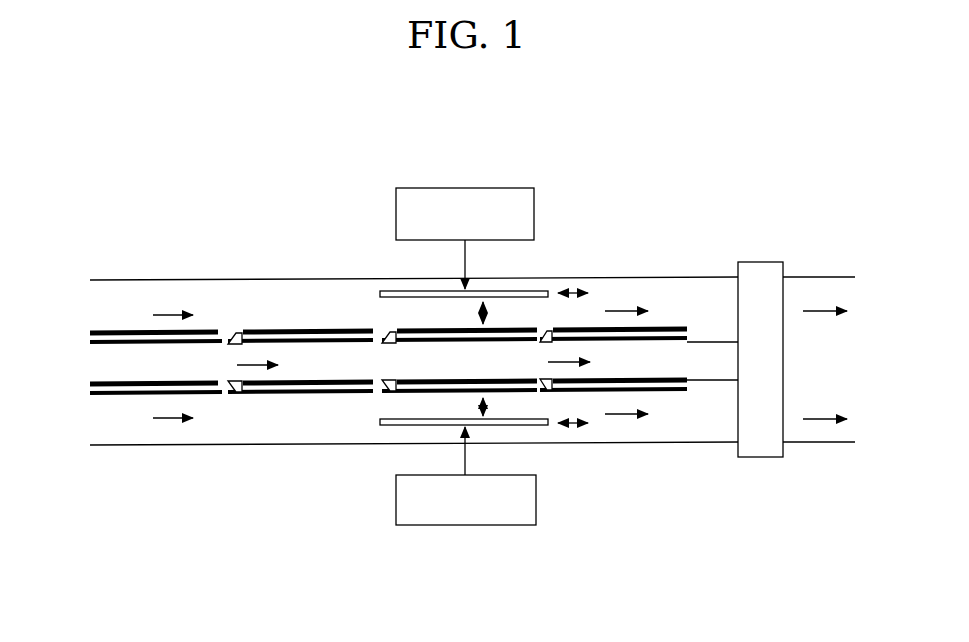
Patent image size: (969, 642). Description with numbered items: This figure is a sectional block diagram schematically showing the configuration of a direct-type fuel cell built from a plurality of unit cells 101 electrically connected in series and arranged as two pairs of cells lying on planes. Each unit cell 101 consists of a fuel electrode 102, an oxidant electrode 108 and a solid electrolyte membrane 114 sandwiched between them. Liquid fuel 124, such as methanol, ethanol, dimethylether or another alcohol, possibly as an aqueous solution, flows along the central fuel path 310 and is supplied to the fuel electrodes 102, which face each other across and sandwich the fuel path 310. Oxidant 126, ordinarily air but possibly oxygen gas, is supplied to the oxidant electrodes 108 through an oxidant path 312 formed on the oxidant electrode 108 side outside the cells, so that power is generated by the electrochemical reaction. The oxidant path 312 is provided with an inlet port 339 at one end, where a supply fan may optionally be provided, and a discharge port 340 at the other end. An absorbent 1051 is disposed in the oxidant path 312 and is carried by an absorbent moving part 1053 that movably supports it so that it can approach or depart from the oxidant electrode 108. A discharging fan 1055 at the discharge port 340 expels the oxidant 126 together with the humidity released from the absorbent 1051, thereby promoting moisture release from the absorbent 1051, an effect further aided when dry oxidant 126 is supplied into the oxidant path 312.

The unit cell 101 is at (276, 326).
The fuel electrode 102 is at (333, 328).
The oxidant electrode 108 is at (378, 600).
The solid electrolyte membrane 114 is at (313, 327).
The fuel 124 is at (409, 364).
The oxidant 126 is at (498, 364).
The fuel path 310 is at (97, 380).
The oxidant path 312 is at (551, 287).
The inlet port 339 is at (92, 313).
The discharge port 340 is at (676, 287).
The absorbent 1051 is at (548, 291).
The absorbent moving part 1053 is at (482, 188).
The discharging fan 1055 is at (760, 457).